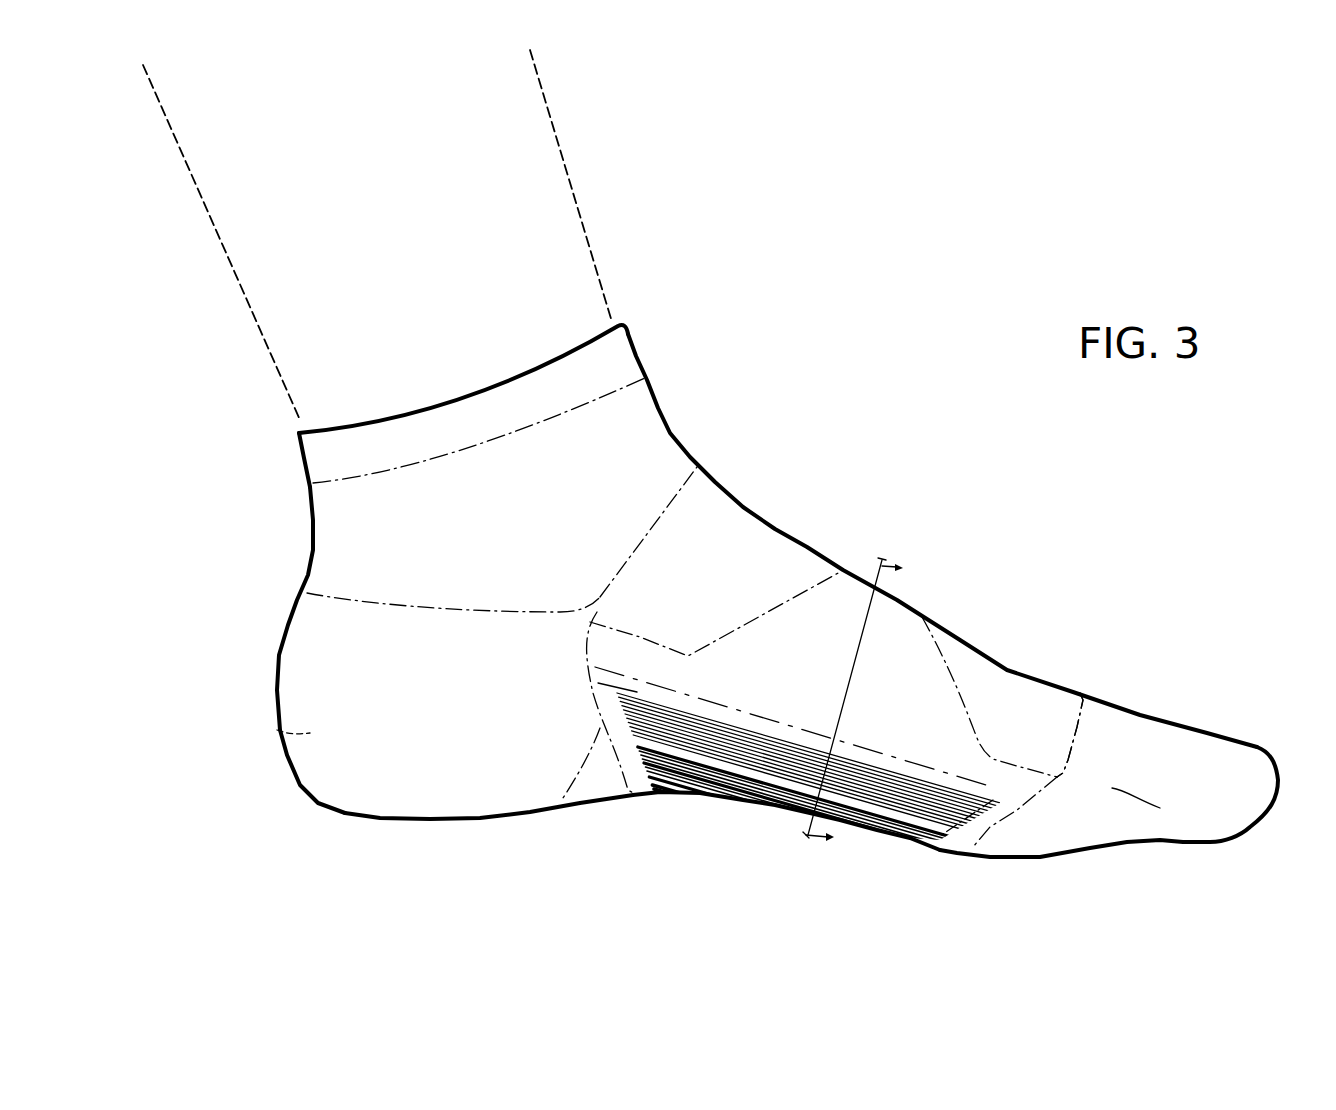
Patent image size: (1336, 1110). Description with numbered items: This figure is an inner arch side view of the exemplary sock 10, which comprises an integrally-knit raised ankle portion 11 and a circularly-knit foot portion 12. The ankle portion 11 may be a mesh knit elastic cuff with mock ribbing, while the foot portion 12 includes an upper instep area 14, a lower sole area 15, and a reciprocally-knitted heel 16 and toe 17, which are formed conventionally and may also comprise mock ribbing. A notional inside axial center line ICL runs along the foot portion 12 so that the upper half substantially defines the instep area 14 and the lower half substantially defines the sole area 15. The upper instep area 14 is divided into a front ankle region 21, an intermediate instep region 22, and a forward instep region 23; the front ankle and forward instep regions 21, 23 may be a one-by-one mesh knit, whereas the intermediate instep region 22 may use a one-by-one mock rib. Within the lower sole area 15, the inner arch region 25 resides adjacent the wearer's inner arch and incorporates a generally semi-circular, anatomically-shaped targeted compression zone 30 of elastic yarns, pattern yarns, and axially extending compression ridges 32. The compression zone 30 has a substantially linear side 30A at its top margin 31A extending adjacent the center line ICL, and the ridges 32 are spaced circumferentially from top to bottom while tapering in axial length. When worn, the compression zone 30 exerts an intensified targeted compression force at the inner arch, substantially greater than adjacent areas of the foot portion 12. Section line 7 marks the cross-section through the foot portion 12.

The sock 10 is at (936, 497).
The raised ankle portion 11 is at (694, 397).
The foot portion 12 is at (1064, 652).
The upper instep area 14 is at (833, 536).
The lower sole area 15 is at (1084, 872).
The heel 16 is at (277, 730).
The toe 17 is at (1168, 743).
The front ankle region 21 is at (768, 543).
The intermediate instep region 22 is at (920, 628).
The forward instep region 23 is at (1070, 702).
The inner arch region 25 is at (960, 842).
The targeted compression zone 30 is at (763, 776).
The linear side 30A is at (905, 777).
The top margin 31A is at (743, 738).
The compression ridges 32 is at (819, 823).
The section line 7- 7 is at (861, 704).
The inside axial center line ICL is at (668, 688).